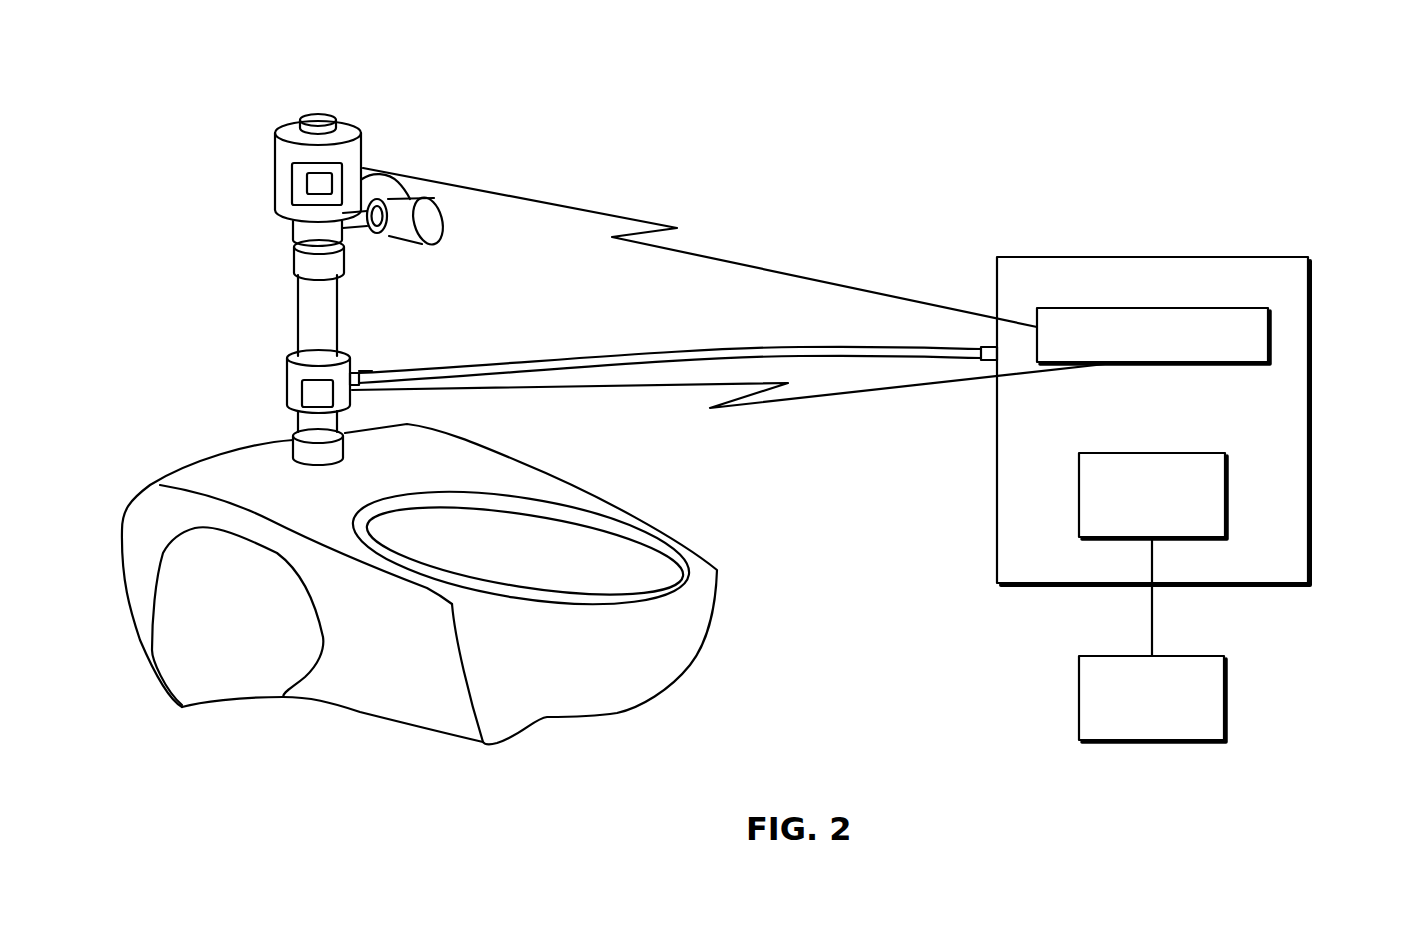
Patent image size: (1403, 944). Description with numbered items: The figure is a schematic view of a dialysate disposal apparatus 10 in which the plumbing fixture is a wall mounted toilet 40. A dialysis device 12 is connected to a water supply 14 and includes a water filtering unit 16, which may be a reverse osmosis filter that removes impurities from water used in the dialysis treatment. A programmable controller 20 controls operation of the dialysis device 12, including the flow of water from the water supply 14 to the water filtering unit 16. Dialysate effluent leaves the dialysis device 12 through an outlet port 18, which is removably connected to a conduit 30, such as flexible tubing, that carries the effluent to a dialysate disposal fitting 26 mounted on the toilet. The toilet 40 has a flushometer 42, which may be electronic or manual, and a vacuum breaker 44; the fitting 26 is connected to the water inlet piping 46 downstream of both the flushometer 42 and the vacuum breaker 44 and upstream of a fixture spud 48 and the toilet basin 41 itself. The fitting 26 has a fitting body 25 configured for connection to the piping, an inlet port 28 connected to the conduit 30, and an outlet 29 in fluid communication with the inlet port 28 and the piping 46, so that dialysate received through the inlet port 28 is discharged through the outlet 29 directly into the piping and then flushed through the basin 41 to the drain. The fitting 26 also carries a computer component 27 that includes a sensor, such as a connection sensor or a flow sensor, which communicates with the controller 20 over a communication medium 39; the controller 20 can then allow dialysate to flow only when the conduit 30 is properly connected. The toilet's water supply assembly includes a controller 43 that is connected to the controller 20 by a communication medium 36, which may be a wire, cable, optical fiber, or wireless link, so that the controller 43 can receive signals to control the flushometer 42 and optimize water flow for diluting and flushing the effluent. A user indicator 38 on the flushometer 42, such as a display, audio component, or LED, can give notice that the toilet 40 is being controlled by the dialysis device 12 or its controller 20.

The dialysate disposal apparatus 10 is at (1128, 99).
The dialysis device 12 is at (1310, 388).
The water supply 14 is at (1133, 656).
The water filtering unit 16 is at (1136, 453).
The outlet port 18 is at (985, 347).
The controller 20 is at (1093, 308).
The fitting body 25 is at (287, 403).
The dialysate disposal fitting 26 is at (286, 373).
The computer component 27 is at (318, 393).
The inlet port 28 is at (355, 374).
The outlet 29 is at (380, 372).
The conduit 30 is at (650, 352).
The communication medium 36 is at (766, 266).
The user indicator 38 is at (322, 183).
The communication medium 39 is at (803, 400).
The toilet 40 is at (248, 663).
The toilet basin 41 is at (483, 742).
The flushometer 42 is at (278, 164).
The controller 43 is at (355, 181).
The vacuum breaker 44 is at (301, 266).
The piping 46 is at (307, 311).
The fixture spud 48 is at (298, 453).